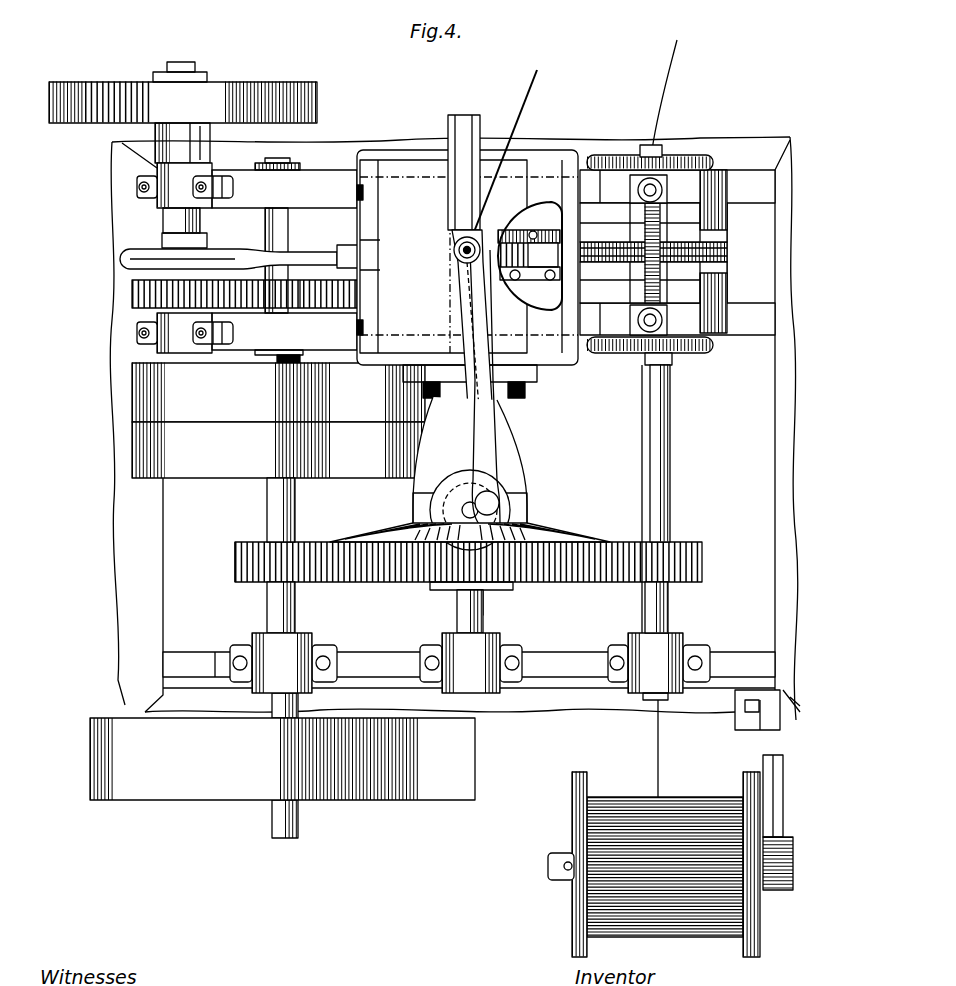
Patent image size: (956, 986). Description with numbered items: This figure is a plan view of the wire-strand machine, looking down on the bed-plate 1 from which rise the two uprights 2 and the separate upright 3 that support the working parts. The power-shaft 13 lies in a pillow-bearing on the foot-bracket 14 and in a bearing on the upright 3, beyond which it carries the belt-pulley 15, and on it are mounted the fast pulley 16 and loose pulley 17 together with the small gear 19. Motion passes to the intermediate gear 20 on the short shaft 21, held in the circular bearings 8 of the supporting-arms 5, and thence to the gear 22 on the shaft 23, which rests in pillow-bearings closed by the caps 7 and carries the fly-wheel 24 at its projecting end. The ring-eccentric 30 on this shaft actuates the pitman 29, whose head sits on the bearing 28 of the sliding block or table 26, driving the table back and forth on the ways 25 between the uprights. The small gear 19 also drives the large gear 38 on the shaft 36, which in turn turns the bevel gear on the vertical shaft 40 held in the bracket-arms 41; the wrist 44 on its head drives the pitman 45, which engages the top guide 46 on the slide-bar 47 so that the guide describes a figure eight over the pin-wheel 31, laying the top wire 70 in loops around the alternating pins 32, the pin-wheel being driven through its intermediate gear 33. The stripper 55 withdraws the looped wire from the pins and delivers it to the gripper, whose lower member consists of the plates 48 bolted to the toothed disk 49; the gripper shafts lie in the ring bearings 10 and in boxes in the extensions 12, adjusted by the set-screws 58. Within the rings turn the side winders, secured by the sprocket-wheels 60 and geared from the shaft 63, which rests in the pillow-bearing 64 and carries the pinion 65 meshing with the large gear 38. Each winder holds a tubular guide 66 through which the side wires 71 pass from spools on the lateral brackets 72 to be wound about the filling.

The bed-plate 1 is at (455, 428).
The uprights 2 is at (738, 322).
The separate upright 3 is at (360, 660).
The supporting-arm 5 is at (284, 260).
The cap 7 is at (165, 198).
The circular bearing 8 is at (298, 166).
The ring bearing 10 is at (735, 270).
The extension 12 is at (700, 188).
The power-shaft 13 is at (293, 616).
The foot-bracket 14 is at (283, 663).
The belt-pulley 15 is at (282, 759).
The fast pulley 16 is at (278, 392).
The loose pulley 17 is at (278, 450).
The small gear 19 is at (238, 586).
The intermediate gear 20 is at (322, 300).
The short shaft 21 is at (285, 160).
The gear 22 is at (132, 296).
The shaft 23 is at (205, 226).
The fly-wheel 24 is at (70, 125).
The ways 25 is at (548, 165).
The sliding block or table 26 is at (467, 256).
The bearing 28 is at (372, 250).
The pitman 29 is at (280, 260).
The ring-eccentric 30 is at (138, 243).
The pin-wheel 31 is at (560, 212).
The pins 32 is at (533, 231).
The intermediate gear 33 is at (512, 278).
The shaft 36 is at (485, 616).
The large gear 38 is at (428, 582).
The vertical shaft 40 is at (455, 510).
The bracket-arms 41 is at (470, 462).
The wrist 44 is at (500, 503).
The pitman 45 is at (498, 428).
The top guide 46 is at (454, 248).
The slide-bar 47 is at (462, 120).
The plates 48 is at (613, 245).
The toothed disk or gear 49 is at (612, 262).
The stripper 55 is at (529, 255).
The set-screw 58 is at (658, 182).
The sprocket-wheel 60 is at (612, 152).
The shaft 63 is at (668, 612).
The pillow-bearing 64 is at (635, 640).
The pinion 65 is at (702, 558).
The tubular guide 66 is at (666, 362).
The top wire 70 is at (530, 98).
The side wires 71 is at (672, 84).
The lateral brackets 72 is at (755, 725).